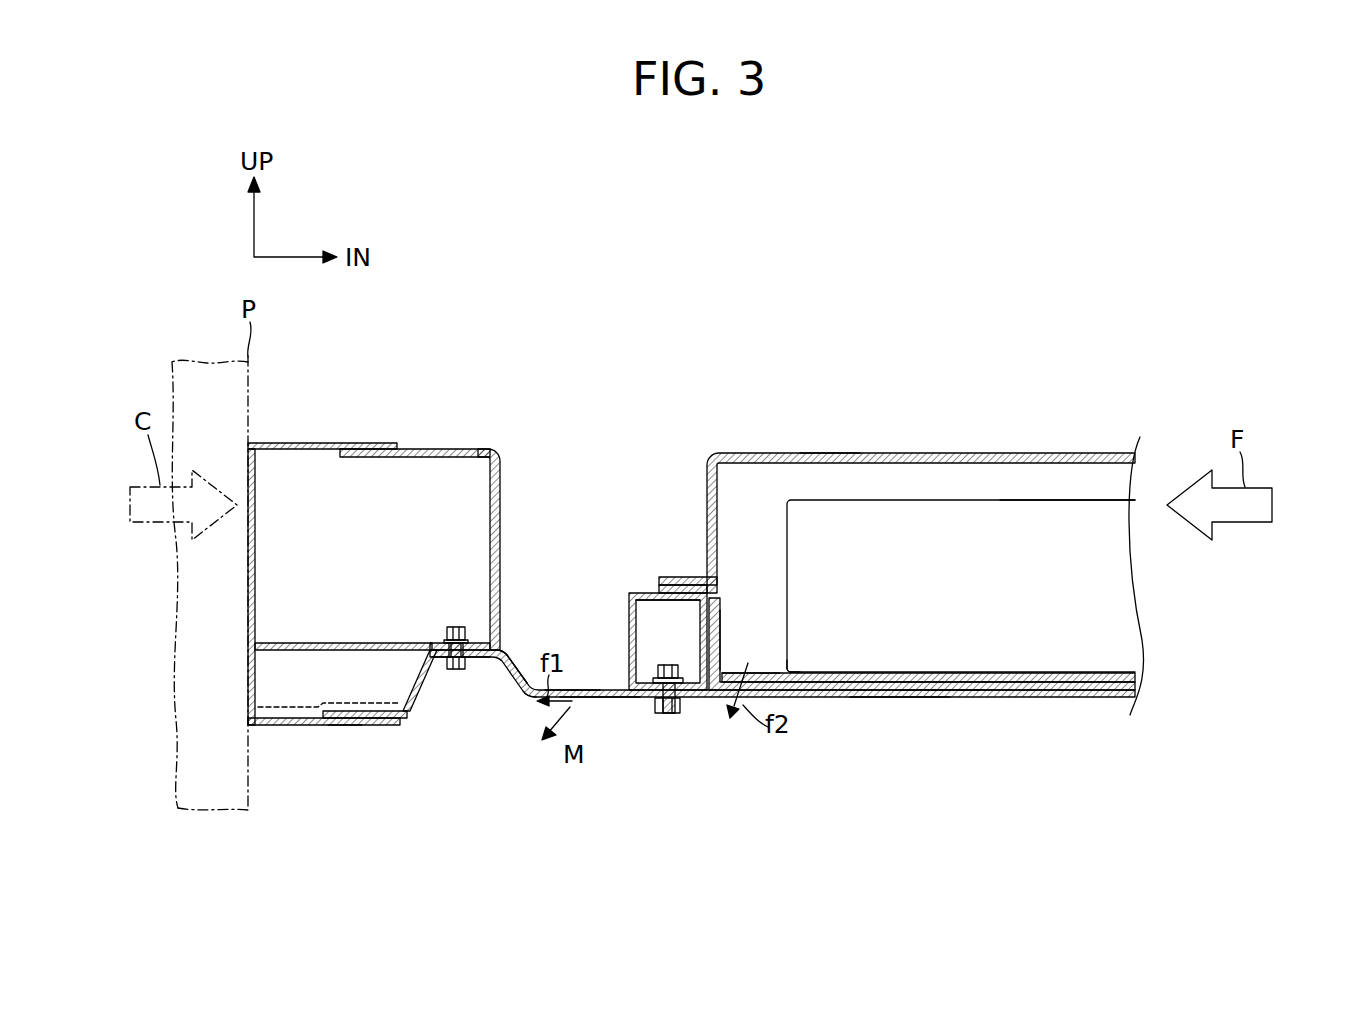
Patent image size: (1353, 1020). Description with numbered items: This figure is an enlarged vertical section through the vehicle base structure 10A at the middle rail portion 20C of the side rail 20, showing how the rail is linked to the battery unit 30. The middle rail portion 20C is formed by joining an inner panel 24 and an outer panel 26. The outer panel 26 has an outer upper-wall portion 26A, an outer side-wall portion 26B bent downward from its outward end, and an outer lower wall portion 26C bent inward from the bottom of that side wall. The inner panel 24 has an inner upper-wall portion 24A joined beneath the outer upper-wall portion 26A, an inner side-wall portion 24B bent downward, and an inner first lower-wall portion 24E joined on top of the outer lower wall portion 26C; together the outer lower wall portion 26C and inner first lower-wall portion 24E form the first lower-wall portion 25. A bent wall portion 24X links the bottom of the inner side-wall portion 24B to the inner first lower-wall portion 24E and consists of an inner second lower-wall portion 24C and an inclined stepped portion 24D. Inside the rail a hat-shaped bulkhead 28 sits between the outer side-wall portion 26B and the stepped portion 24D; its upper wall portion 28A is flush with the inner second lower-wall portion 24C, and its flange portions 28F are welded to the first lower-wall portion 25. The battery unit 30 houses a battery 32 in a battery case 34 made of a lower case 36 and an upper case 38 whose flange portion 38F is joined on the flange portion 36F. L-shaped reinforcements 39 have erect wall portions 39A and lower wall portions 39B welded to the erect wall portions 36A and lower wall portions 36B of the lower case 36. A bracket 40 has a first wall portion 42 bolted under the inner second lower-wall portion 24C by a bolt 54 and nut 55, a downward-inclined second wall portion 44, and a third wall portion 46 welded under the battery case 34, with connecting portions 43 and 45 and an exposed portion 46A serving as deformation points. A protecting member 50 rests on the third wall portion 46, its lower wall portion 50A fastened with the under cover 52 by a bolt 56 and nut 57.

The vehicle lower structure 10A is at (990, 285).
The side rail 20 is at (418, 545).
The middle rail portion 20C is at (470, 352).
The inner panel 24 is at (516, 546).
The inner upper-wall portion 24A is at (424, 448).
The inner side-wall portion 24B is at (500, 505).
The inner second lower-wall portion 24C is at (489, 640).
The stepped portion 24D is at (423, 682).
The inner first lower-wall portion 24E is at (355, 708).
The bent wall portion 24X is at (432, 625).
The first lower-wall portion 25 is at (342, 727).
The outer panel 26 is at (291, 422).
The outer upper-wall portion 26A is at (323, 441).
The outer side-wall portion 26B is at (257, 546).
The outer lower wall portion 26C is at (290, 728).
The bulkhead 28 is at (328, 640).
The upper wall portion 28A is at (288, 640).
The flange portions 28F is at (290, 688).
The battery unit 30 is at (1011, 425).
The battery 32 is at (1100, 498).
The battery case 34 is at (826, 438).
The lower case 36 is at (1055, 700).
The erect wall portions 36A is at (722, 610).
The lower wall portions 36B is at (932, 700).
The flange portion 36F is at (659, 589).
The upper case 38 is at (896, 452).
The flange portion 38F is at (684, 576).
The reinforcements 39 is at (727, 622).
The erect wall portions 39A is at (722, 640).
The lower wall portions 39B is at (789, 671).
The bracket 40 is at (592, 702).
The first wall portion 42 is at (466, 659).
The connecting portion 43 is at (492, 652).
The second wall portion 44 is at (515, 662).
The connecting portion 45 is at (520, 697).
The third wall portion 46 is at (612, 698).
The exposed portion 46A is at (562, 689).
The protecting member 50 is at (628, 628).
The lower wall portion 50A is at (650, 668).
The under cover 52 is at (893, 702).
The bolt 54 is at (456, 672).
The nut 55 is at (449, 628).
The bolt 56 is at (668, 713).
The nut 57 is at (669, 673).